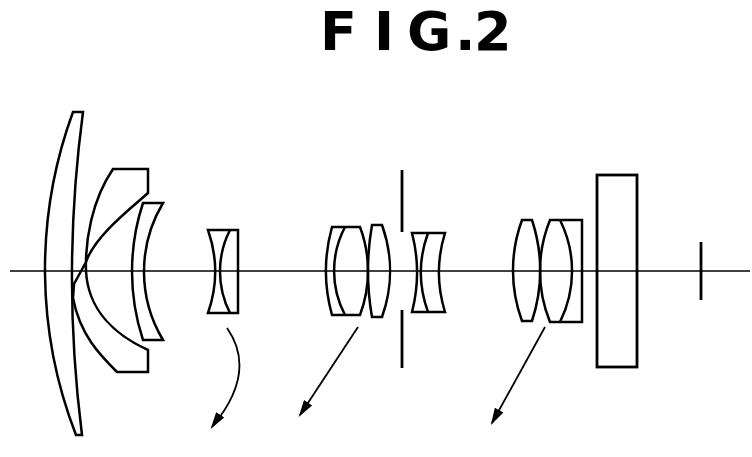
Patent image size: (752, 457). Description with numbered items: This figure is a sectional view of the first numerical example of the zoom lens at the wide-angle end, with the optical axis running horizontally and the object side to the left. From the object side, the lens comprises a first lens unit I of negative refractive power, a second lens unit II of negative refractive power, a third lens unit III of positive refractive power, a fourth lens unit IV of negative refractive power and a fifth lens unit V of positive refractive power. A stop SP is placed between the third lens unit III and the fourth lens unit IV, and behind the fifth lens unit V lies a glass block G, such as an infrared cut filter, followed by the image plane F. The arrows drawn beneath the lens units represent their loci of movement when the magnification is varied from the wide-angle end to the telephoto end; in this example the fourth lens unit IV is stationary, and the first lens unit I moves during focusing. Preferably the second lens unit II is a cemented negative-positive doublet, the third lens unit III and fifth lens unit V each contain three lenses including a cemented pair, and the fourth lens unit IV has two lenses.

The first lens unit I is at (168, 105).
The second lens unit II is at (242, 202).
The third lens unit III is at (388, 203).
The fourth lens unit IV is at (410, 203).
The fifth lens unit V is at (513, 203).
The stop SP is at (400, 182).
The glass block G is at (614, 192).
The image plane F is at (699, 258).